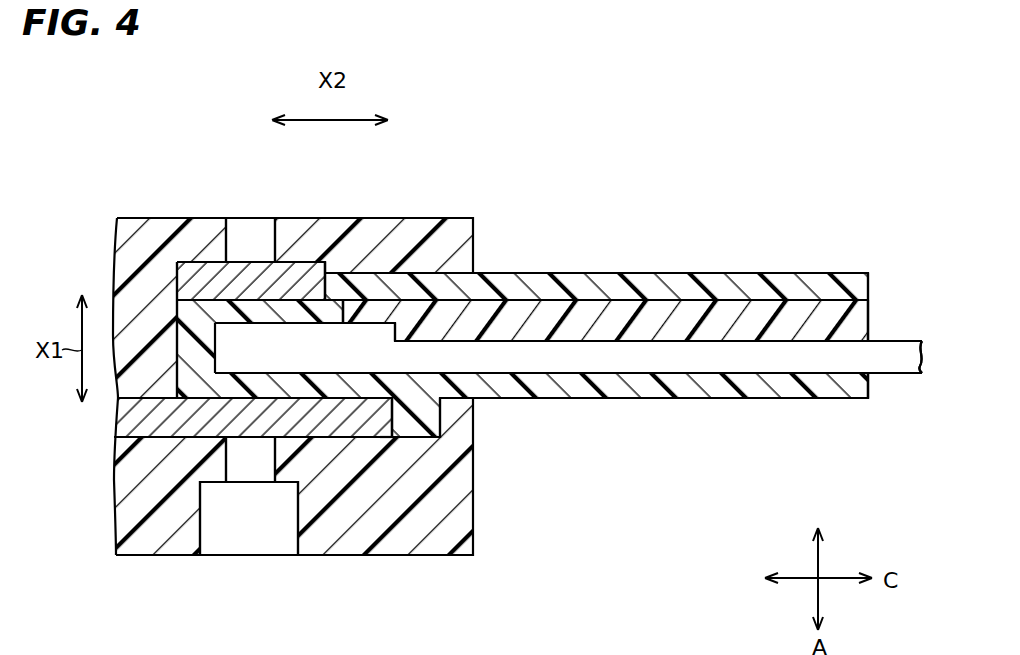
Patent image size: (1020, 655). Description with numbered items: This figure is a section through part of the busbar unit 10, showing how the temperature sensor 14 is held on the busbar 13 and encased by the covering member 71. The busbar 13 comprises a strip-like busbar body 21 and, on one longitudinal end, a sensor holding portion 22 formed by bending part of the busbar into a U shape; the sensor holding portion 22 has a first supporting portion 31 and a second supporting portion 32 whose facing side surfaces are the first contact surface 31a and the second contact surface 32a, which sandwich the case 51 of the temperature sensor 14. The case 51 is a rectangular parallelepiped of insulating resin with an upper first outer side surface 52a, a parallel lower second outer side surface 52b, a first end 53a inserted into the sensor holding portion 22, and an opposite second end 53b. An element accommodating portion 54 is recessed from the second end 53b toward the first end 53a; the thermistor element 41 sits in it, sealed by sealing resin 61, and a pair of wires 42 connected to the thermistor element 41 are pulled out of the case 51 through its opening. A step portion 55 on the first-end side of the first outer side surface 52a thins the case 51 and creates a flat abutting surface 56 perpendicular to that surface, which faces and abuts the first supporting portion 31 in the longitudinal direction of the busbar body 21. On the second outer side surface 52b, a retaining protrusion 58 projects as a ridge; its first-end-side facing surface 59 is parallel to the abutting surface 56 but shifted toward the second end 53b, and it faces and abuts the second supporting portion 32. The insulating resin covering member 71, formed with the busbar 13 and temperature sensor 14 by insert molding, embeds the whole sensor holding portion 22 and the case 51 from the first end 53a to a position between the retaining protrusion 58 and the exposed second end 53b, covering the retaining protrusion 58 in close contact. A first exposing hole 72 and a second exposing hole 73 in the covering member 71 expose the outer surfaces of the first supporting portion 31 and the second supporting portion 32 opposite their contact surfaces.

The busbar unit 10 is at (572, 154).
The busbar 13 is at (329, 448).
The temperature sensor 14 is at (774, 260).
The busbar body 21 is at (143, 430).
The sensor holding portion 22 is at (172, 287).
The first supporting portion 31 is at (214, 268).
The first contact surface 31a is at (240, 323).
The second supporting portion 32 is at (253, 432).
The second contact surface 32a is at (283, 397).
The thermistor element 41 is at (362, 338).
The wires 42 is at (893, 376).
The case 51 is at (688, 398).
The first outer side surface 52a is at (600, 273).
The second outer side surface 52b is at (612, 398).
The first end 53a is at (176, 315).
The second end 53b is at (870, 283).
The element accommodating portion 54 is at (540, 374).
The step portion 55 is at (240, 322).
The abutting surface 56 is at (318, 280).
The retaining protrusion 58 is at (433, 418).
The facing surface 59 is at (385, 436).
The sealing resin 61 is at (747, 274).
The covering member 71 is at (434, 220).
The first exposing hole 72 is at (272, 221).
The second exposing hole 73 is at (288, 556).